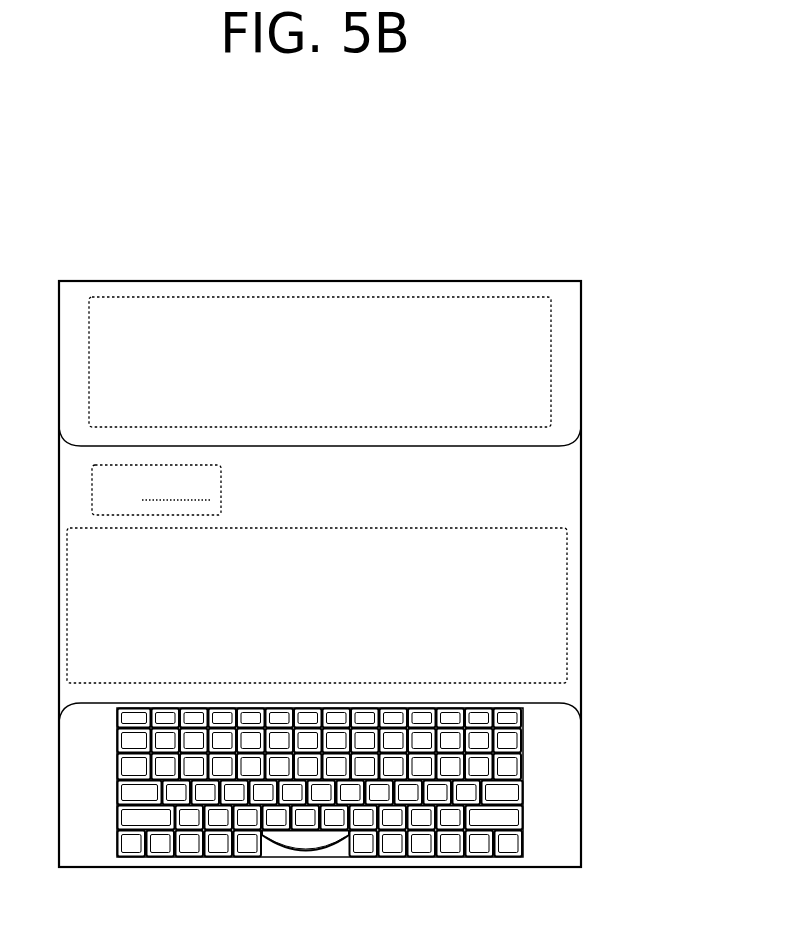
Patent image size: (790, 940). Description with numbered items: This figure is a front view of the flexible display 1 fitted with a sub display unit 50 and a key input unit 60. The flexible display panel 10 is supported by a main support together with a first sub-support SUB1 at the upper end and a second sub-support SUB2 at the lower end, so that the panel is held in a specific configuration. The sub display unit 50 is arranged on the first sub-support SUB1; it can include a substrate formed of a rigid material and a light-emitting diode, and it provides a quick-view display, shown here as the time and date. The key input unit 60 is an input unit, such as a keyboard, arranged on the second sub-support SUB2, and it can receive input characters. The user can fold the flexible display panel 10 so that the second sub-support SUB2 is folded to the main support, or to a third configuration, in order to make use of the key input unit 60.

The flexible display 1 is at (365, 517).
The flexible display panel 10 is at (558, 497).
The sub display unit 50 is at (552, 388).
The key input unit 60 is at (523, 800).
The first sub-support SUB1 is at (568, 332).
The second sub-support SUB2 is at (570, 733).